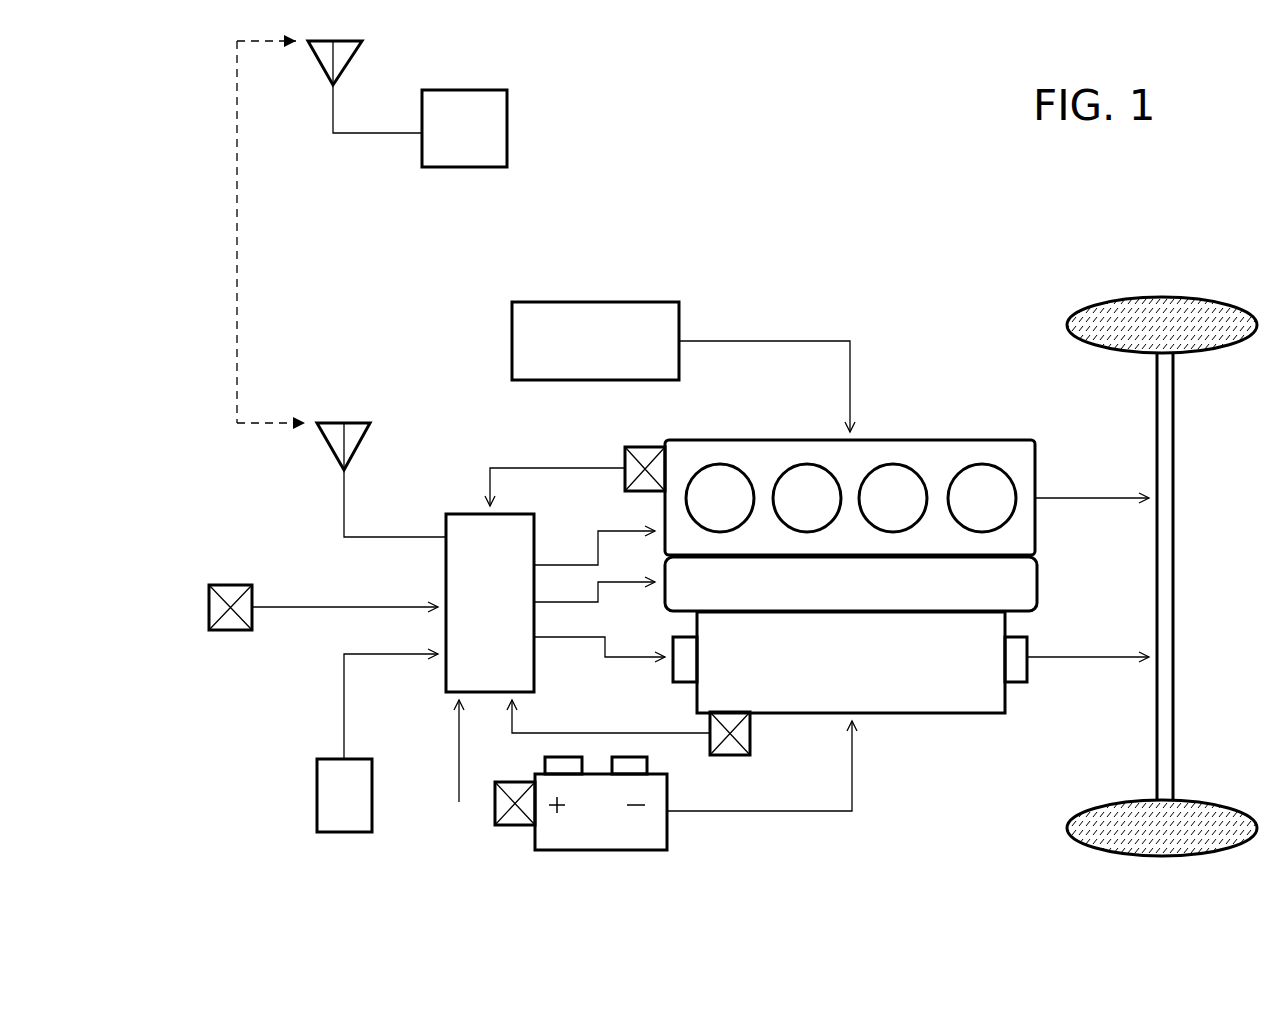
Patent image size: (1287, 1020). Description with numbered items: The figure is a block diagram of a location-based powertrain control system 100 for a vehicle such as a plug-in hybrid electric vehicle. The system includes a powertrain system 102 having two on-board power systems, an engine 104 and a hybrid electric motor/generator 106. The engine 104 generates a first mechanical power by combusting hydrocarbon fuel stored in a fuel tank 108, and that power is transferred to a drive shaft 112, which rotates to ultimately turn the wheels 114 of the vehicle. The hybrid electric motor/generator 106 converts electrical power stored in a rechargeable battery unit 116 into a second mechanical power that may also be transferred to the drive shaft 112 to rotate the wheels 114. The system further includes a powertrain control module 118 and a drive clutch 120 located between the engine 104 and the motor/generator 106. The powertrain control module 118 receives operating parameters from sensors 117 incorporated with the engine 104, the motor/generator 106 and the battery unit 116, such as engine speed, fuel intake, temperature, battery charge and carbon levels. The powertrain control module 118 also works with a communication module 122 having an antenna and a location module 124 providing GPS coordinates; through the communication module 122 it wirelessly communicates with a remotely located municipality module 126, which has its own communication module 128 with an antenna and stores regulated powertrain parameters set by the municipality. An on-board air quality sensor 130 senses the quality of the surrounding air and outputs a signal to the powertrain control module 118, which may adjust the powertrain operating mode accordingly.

The location-based powertrain control system 100 is at (781, 214).
The powertrain system 102 is at (948, 432).
The engine 104 is at (725, 440).
The hybrid electric motor/generator 106 is at (937, 715).
The fuel tank 108 is at (617, 304).
The drive shaft 112 is at (1175, 527).
The wheels 114 is at (1110, 300).
The rechargeable battery unit 116 is at (668, 828).
The sensors 117 is at (633, 447).
The powertrain control module 118 is at (465, 517).
The drive clutch 120 is at (1028, 601).
The communication module 122 is at (336, 498).
The location module 124 is at (322, 785).
The municipality module 126 is at (507, 128).
The communication module 128 is at (325, 105).
The air quality sensor 130 is at (212, 613).